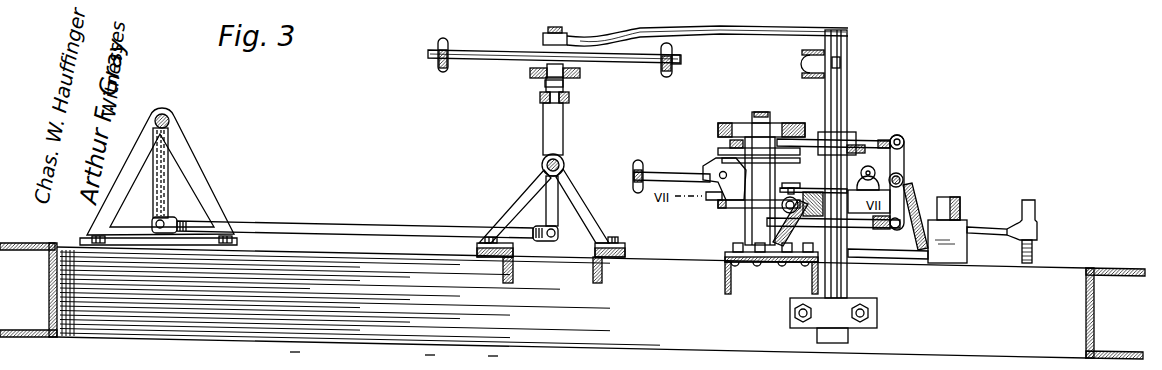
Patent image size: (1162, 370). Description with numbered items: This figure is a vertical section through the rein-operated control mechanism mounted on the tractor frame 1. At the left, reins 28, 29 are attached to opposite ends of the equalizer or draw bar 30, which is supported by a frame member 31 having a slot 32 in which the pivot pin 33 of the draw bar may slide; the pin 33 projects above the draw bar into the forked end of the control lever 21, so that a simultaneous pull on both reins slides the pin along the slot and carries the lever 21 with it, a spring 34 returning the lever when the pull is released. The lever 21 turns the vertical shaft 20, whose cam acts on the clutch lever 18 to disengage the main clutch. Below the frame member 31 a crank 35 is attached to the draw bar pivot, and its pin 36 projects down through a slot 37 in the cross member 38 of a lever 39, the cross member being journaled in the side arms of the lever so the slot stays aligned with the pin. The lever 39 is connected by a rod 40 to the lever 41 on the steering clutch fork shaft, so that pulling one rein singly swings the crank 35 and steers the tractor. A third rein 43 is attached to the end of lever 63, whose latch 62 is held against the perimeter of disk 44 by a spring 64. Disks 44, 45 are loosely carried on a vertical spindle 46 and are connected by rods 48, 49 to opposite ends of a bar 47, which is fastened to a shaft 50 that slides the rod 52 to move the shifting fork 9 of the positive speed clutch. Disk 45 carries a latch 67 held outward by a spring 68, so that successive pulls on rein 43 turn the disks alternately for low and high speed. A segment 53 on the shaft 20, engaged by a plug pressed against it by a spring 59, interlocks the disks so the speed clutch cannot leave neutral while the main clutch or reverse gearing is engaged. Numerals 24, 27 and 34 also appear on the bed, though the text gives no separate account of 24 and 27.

The tractor frame 1 is at (720, 349).
The shifting fork 9 is at (1021, 218).
The clutch lever 18 is at (896, 139).
The vertical shaft 20 is at (848, 279).
The control lever 21 is at (757, 38).
The bracket 24 is at (492, 356).
The bed member 27 is at (296, 356).
The rein 28 is at (434, 67).
The rein 29 is at (670, 72).
The draw bar 30 is at (472, 62).
The frame member 31 is at (530, 73).
The slot 32 is at (546, 84).
The pivot pin 33 is at (546, 33).
The spring 34 is at (428, 358).
The crank 35 is at (566, 84).
The crank pin 36 is at (548, 101).
The slot 37 is at (540, 164).
The cross member 38 is at (568, 101).
The lever 39 is at (564, 146).
The rod 40 is at (341, 226).
The lever 41 is at (168, 198).
The third rein 43 is at (634, 179).
The disk 44 is at (718, 212).
The disk 45 is at (786, 128).
The vertical spindle 46 is at (760, 113).
The bar 47 is at (905, 148).
The rod 48 is at (870, 228).
The rod 49 is at (871, 140).
The shaft 50 is at (905, 178).
The rod 52 is at (988, 224).
The segment 53 is at (827, 268).
The spring 59 is at (818, 190).
The latch 62 is at (720, 164).
The lever 63 is at (659, 176).
The spring 64 is at (712, 200).
The latch 67 is at (722, 150).
The spring 68 is at (733, 143).